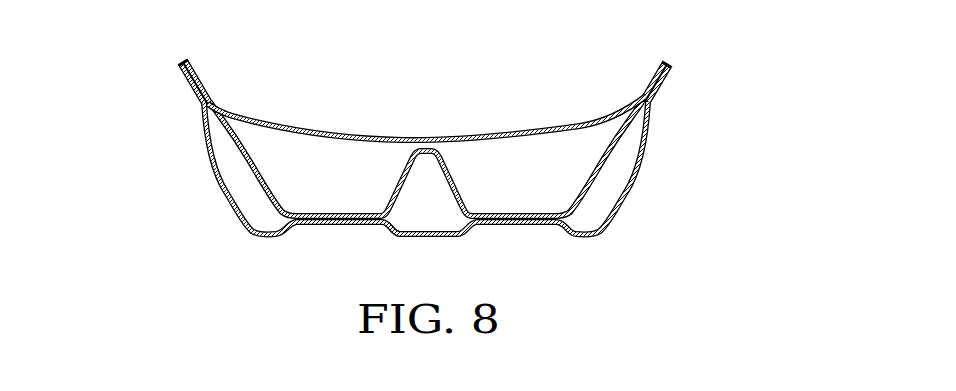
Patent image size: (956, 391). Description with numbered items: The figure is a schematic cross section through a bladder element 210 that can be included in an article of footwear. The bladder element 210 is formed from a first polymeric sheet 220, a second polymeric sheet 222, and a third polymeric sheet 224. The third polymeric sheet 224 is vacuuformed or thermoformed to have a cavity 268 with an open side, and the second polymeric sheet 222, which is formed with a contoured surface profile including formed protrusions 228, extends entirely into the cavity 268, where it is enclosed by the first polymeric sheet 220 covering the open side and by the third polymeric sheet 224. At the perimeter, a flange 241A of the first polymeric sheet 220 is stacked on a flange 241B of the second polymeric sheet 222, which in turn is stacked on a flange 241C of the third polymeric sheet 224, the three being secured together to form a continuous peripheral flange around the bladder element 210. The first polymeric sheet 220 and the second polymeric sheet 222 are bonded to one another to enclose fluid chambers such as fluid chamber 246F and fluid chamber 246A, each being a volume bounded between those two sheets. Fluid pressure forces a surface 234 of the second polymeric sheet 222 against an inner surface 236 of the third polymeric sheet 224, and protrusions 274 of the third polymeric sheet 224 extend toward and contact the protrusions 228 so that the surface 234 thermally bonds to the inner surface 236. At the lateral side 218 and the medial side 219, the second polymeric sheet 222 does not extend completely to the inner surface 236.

The bladder element 210 is at (433, 155).
The lateral side 218 is at (213, 177).
The medial side 219 is at (637, 180).
The first polymeric sheet 220 is at (333, 132).
The second polymeric sheet 222 is at (600, 155).
The third polymeric sheet 224 is at (308, 223).
The formed protrusions 228 is at (287, 222).
The surface 234 is at (343, 232).
The inner surface 236 is at (352, 207).
The flange 241A is at (200, 70).
The flange 241B is at (187, 63).
The flange 241C is at (187, 80).
The fluid chamber 246A is at (483, 160).
The fluid chamber 246F is at (287, 153).
The cavity 268 is at (233, 160).
The protrusions 274 is at (503, 223).